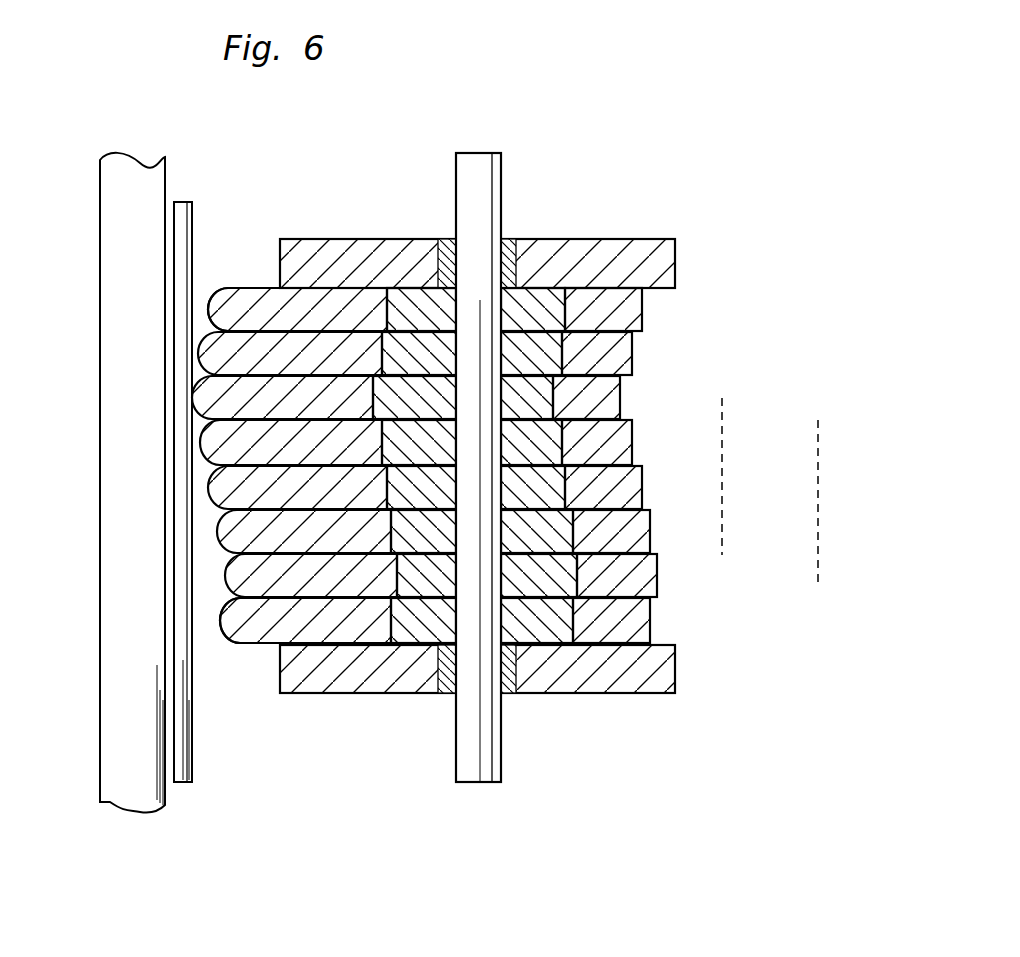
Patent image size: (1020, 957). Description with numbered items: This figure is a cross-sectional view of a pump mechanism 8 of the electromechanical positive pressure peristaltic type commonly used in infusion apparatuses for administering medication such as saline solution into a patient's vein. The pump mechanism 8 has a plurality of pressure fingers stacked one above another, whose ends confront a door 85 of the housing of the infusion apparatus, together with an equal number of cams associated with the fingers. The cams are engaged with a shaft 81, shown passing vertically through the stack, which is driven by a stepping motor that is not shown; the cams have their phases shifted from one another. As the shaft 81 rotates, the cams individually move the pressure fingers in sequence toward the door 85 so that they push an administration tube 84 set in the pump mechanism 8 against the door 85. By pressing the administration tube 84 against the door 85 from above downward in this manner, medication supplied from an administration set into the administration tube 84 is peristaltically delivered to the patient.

The pump mechanism 8 is at (592, 207).
The shaft 81 is at (460, 167).
The administration tube 84 is at (182, 202).
The door 85 is at (107, 735).